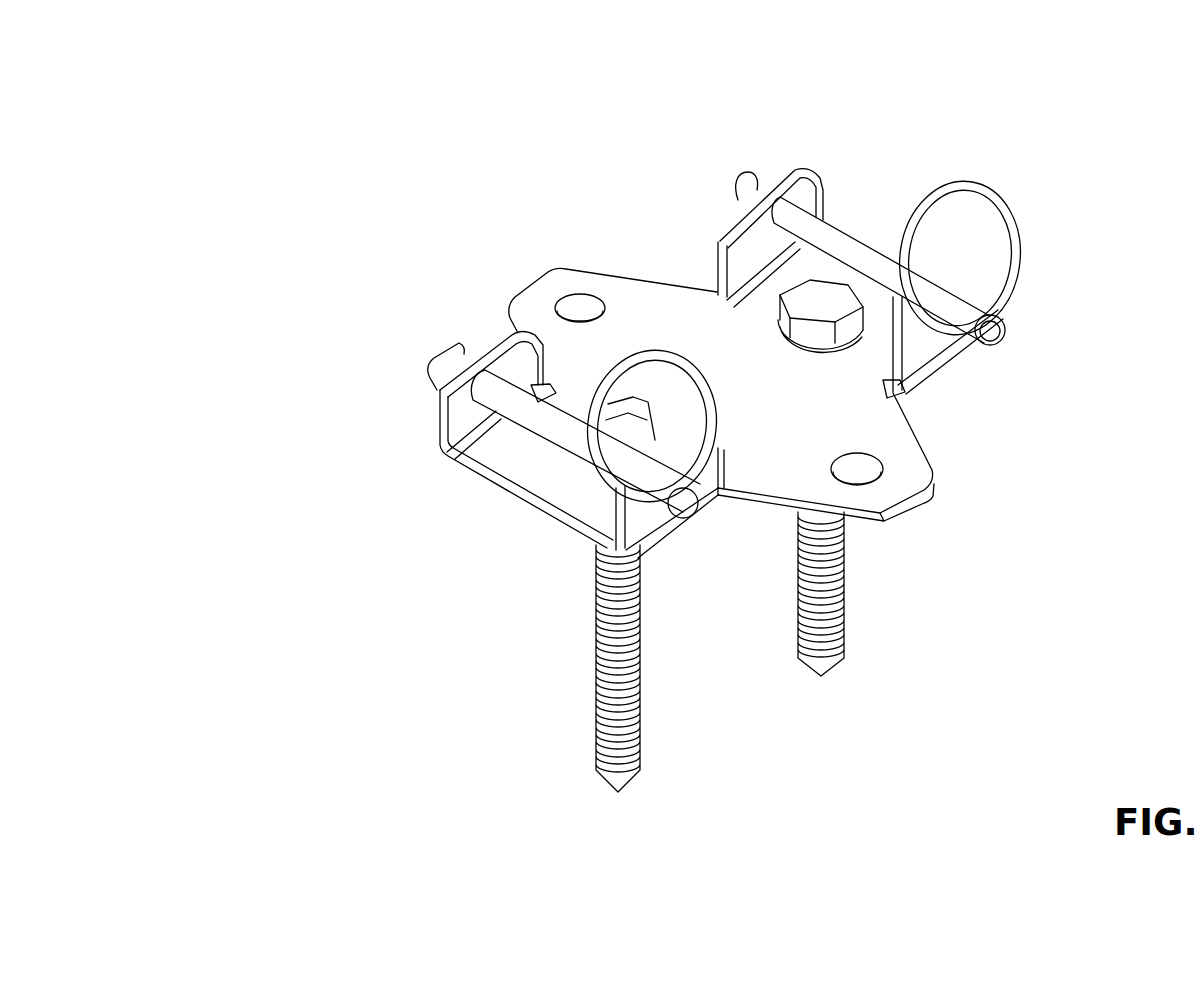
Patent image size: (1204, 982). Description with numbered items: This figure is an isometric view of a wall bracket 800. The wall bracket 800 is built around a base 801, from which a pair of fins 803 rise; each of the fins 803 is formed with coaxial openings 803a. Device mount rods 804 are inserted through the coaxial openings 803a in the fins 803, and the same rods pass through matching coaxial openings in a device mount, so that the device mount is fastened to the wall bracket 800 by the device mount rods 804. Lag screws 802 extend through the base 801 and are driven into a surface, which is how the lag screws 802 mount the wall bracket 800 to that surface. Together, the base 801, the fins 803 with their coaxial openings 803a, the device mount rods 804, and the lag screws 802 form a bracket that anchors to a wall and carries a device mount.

The wall bracket 800 is at (235, 120).
The base 801 is at (778, 391).
The lag screws 802 is at (597, 690).
The fins 803 is at (443, 396).
The coaxial openings 803a is at (476, 380).
The device mount rods 804 is at (540, 436).